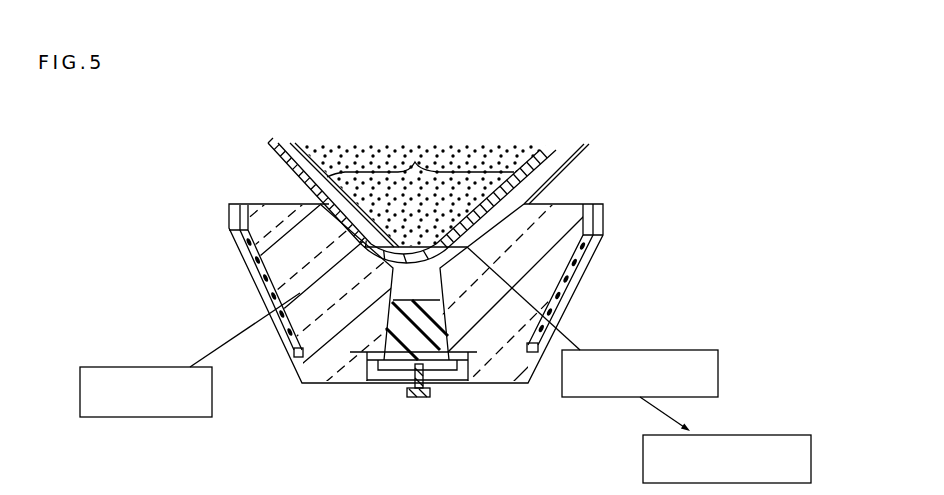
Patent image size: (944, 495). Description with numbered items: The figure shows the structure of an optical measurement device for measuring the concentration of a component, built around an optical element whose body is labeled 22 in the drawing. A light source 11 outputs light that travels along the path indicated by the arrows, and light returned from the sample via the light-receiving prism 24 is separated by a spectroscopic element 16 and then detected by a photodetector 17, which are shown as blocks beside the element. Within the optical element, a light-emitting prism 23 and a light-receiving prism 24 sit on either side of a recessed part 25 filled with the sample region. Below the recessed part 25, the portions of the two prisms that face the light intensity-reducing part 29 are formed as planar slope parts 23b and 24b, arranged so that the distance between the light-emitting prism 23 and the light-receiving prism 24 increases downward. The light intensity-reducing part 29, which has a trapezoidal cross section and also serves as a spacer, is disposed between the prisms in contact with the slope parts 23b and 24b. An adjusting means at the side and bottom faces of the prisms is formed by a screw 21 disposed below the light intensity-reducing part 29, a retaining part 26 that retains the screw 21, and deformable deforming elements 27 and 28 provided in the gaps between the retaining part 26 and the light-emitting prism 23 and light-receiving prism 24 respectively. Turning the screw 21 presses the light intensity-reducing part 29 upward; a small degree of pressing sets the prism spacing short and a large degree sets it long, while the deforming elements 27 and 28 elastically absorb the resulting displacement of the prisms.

The light source 11 is at (146, 367).
The spectroscopic element 16 is at (655, 350).
The photodetector 17 is at (742, 435).
The screw 21 is at (413, 396).
The holder 22 is at (230, 186).
The light-emitting prism 23 is at (306, 222).
The slope part 23b is at (392, 300).
The light-receiving prism 24 is at (548, 230).
The slope part 24b is at (458, 300).
The recessed part 25 is at (420, 160).
The retaining part 26 is at (577, 288).
The deforming element 27 is at (260, 256).
The deforming element 28 is at (580, 258).
The light intensity-reducing part 29 is at (453, 352).